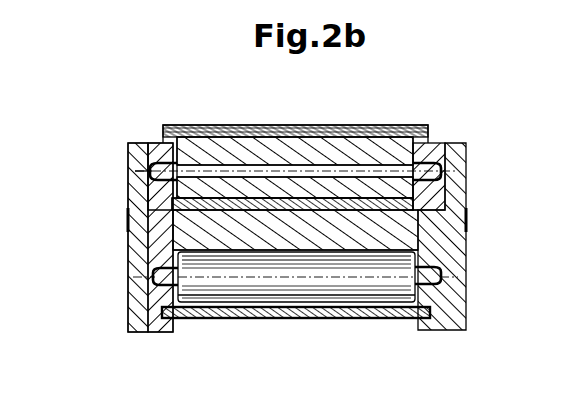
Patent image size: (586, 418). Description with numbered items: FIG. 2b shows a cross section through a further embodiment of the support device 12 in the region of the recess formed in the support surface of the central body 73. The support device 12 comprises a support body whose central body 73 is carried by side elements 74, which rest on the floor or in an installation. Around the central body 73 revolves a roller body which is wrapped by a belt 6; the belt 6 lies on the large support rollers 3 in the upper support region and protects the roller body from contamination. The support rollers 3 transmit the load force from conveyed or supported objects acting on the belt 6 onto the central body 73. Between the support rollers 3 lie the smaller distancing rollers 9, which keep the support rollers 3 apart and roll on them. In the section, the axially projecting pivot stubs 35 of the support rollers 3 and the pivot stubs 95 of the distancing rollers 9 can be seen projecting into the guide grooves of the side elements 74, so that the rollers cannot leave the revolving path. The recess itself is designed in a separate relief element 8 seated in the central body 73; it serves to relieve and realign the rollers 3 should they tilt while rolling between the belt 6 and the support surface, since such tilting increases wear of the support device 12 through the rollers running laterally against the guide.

The support device 12 is at (94, 114).
The support rollers 3 is at (210, 152).
The belt 6 is at (232, 133).
The pivot stubs 35 is at (152, 175).
The relief element 8 is at (435, 193).
The central body 73 is at (402, 228).
The side elements 74 is at (452, 303).
The distancing rollers 9 is at (368, 285).
The pivot stubs 95 is at (152, 283).